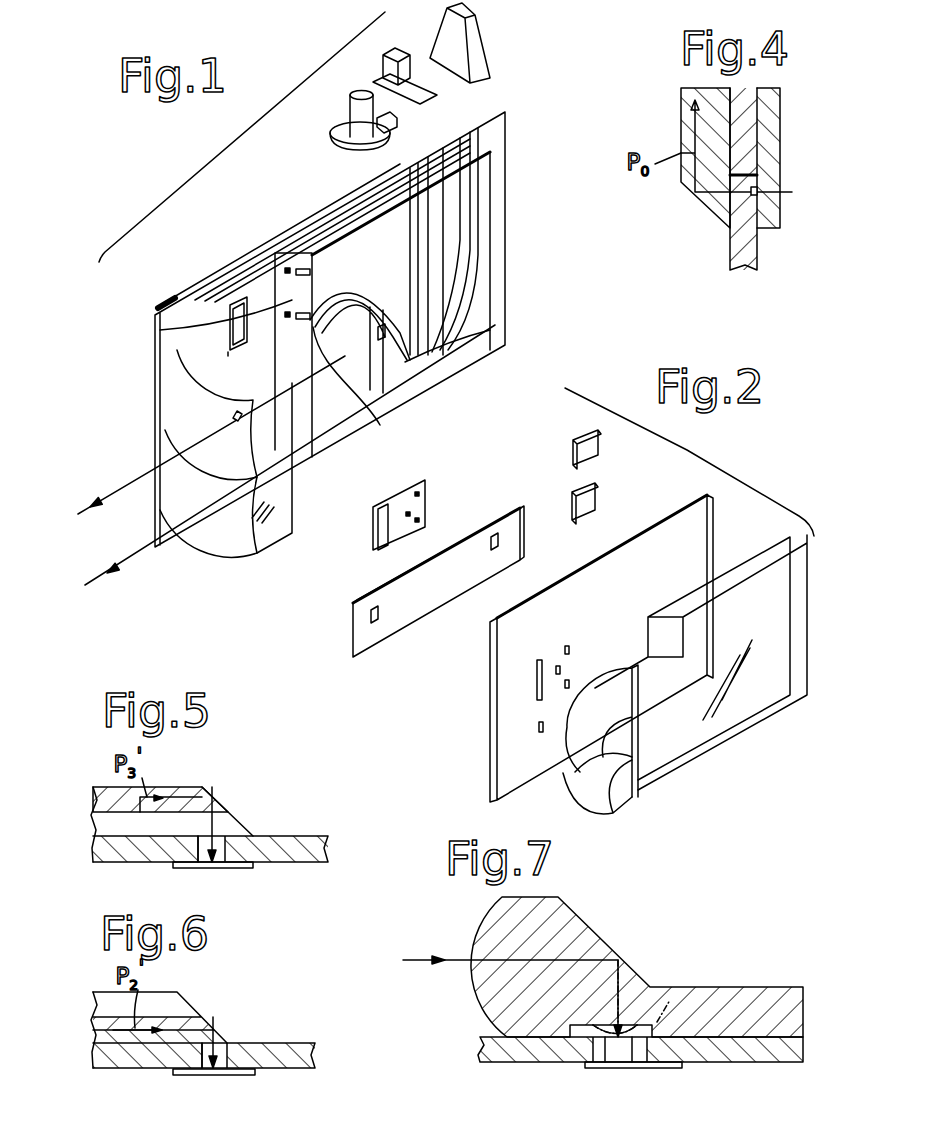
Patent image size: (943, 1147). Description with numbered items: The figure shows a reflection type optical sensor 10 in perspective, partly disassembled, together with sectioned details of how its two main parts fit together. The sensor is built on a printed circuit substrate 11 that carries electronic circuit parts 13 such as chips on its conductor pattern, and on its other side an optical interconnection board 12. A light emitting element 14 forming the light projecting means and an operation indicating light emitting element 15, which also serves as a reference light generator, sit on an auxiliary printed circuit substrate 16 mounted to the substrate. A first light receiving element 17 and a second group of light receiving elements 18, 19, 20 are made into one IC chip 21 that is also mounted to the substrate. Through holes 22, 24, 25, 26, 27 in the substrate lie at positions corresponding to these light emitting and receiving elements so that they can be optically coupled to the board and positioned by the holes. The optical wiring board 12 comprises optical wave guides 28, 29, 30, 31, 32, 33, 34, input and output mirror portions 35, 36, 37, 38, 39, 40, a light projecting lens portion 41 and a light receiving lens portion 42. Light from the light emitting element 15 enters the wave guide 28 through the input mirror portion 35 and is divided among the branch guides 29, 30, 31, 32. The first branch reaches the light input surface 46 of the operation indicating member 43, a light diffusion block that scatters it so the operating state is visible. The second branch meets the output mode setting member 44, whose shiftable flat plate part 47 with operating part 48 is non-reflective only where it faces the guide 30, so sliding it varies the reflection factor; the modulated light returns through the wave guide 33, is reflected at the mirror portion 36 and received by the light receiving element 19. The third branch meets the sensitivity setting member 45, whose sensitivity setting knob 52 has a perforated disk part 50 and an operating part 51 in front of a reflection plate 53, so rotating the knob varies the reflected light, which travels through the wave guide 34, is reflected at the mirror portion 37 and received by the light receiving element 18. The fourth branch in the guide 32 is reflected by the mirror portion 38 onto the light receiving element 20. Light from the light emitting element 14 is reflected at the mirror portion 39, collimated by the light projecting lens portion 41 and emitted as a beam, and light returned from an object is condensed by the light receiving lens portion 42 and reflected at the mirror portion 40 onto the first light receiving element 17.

In FIG. 1, the reflection type optical sensor 10 is at (236, 140).
In FIG. 2, the reflection type optical sensor 10 is at (684, 450).
In FIG. 1, the printed circuit substrate 11 is at (502, 170).
In FIG. 4, the printed circuit substrate 11 is at (740, 252).
In FIG. 2, the printed circuit substrate 11 is at (712, 540).
In FIG. 5, the printed circuit substrate 11 is at (296, 840).
In FIG. 6, the printed circuit substrate 11 is at (298, 1046).
In FIG. 7, the printed circuit substrate 11 is at (738, 1050).
In FIG. 1, the optical interconnection board 12 is at (487, 292).
In FIG. 4, the optical interconnection board 12 is at (681, 122).
In FIG. 2, the optical interconnection board 12 is at (733, 723).
In FIG. 5, the optical interconnection board 12 is at (193, 790).
In FIG. 6, the optical interconnection board 12 is at (175, 1004).
In FIG. 7, the optical interconnection board 12 is at (720, 997).
In FIG. 2, the electronic circuit parts 13 is at (598, 500).
In FIG. 1, the light emitting element 14 is at (163, 431).
In FIG. 2, the light emitting element 14 is at (387, 610).
In FIG. 1, the operation indicating light emitting element 15 is at (386, 340).
In FIG. 4, the operation indicating light emitting element 15 is at (760, 196).
In FIG. 2, the operation indicating light emitting element 15 is at (500, 540).
In FIG. 4, the auxiliary printed circuit substrate 16 is at (768, 130).
In FIG. 2, the auxiliary printed circuit substrate 16 is at (412, 612).
In FIG. 1, the first light receiving element 17 is at (228, 297).
In FIG. 2, the first light receiving element 17 is at (378, 527).
In FIG. 7, the first light receiving element 17 is at (617, 1070).
In FIG. 1, the light receiving element 18 is at (286, 270).
In FIG. 2, the light receiving element 18 is at (419, 494).
In FIG. 5, the light receiving element 18 is at (212, 870).
In FIG. 2, the light receiving element 19 is at (410, 514).
In FIG. 6, the light receiving element 19 is at (218, 1076).
In FIG. 1, the light receiving element 20 is at (308, 316).
In FIG. 2, the light receiving element 20 is at (419, 521).
In FIG. 1, the IC chip 21 is at (240, 297).
In FIG. 2, the IC chip 21 is at (374, 548).
In FIG. 5, the IC chip 21 is at (243, 870).
In FIG. 6, the IC chip 21 is at (193, 1076).
In FIG. 7, the IC chip 21 is at (660, 1070).
In FIG. 2, the through hole 22 is at (537, 728).
In FIG. 2, the through hole 24 is at (537, 680).
In FIG. 7, the through hole 24 is at (605, 1050).
In FIG. 2, the through hole 25 is at (566, 647).
In FIG. 5, the through hole 25 is at (222, 845).
In FIG. 2, the through hole 26 is at (557, 668).
In FIG. 6, the through hole 26 is at (222, 1052).
In FIG. 2, the through hole 27 is at (567, 683).
In FIG. 1, the optical wave guide 28 is at (430, 354).
In FIG. 1, the optical wave guide 29 is at (442, 240).
In FIG. 1, the optical wave guide 30 is at (433, 213).
In FIG. 1, the optical wave guide 31 is at (392, 210).
In FIG. 1, the optical wave guide 32 is at (443, 338).
In FIG. 1, the optical wave guide 33 is at (346, 242).
In FIG. 1, the optical wave guide 34 is at (316, 252).
In FIG. 1, the input mirror portion 35 is at (480, 324).
In FIG. 4, the input mirror portion 35 is at (705, 200).
In FIG. 1, the mirror portion 36 is at (160, 318).
In FIG. 6, the mirror portion 36 is at (203, 1023).
In FIG. 1, the mirror portion 37 is at (290, 262).
In FIG. 5, the mirror portion 37 is at (215, 808).
In FIG. 1, the mirror portion 38 is at (380, 425).
In FIG. 1, the mirror portion 39 is at (294, 462).
In FIG. 2, the mirror portion 39 is at (633, 787).
In FIG. 1, the mirror portion 40 is at (288, 360).
In FIG. 2, the mirror portion 40 is at (634, 728).
In FIG. 7, the mirror portion 40 is at (612, 957).
In FIG. 1, the light projecting lens portion 41 is at (222, 544).
In FIG. 1, the light receiving lens portion 42 is at (178, 388).
In FIG. 7, the light receiving lens portion 42 is at (567, 937).
In FIG. 1, the operation indicating member 43 is at (484, 42).
In FIG. 1, the output mode setting member 44 is at (384, 62).
In FIG. 1, the sensitivity setting member 45 is at (352, 118).
In FIG. 1, the light input surface 46 is at (486, 76).
In FIG. 1, the flat plate part 47 is at (435, 98).
In FIG. 1, the operating part 48 is at (404, 58).
In FIG. 1, the disk part 50 is at (337, 131).
In FIG. 1, the operating part 51 is at (332, 146).
In FIG. 1, the sensitivity setting knob 52 is at (346, 150).
In FIG. 1, the reflection plate 53 is at (397, 122).